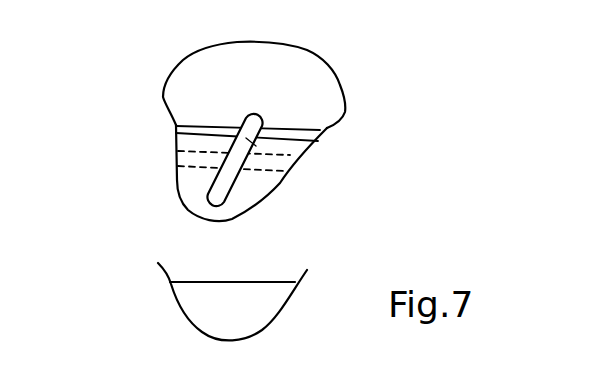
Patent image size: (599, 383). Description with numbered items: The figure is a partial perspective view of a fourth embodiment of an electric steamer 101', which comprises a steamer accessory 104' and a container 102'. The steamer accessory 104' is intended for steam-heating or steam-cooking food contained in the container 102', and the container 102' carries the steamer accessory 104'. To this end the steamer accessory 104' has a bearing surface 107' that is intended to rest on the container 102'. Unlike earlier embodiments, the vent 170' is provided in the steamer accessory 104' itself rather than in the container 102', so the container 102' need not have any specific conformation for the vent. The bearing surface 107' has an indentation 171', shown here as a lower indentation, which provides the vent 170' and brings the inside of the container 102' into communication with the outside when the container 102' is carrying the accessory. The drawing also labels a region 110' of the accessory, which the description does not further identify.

The electric steamer 101' is at (78, 319).
The container 102' is at (251, 302).
The steamer accessory 104' is at (206, 85).
The bearing surface 107' is at (216, 141).
The lower portion of cap 110' is at (258, 173).
The vent 170' is at (245, 129).
The indentation 171' is at (282, 148).